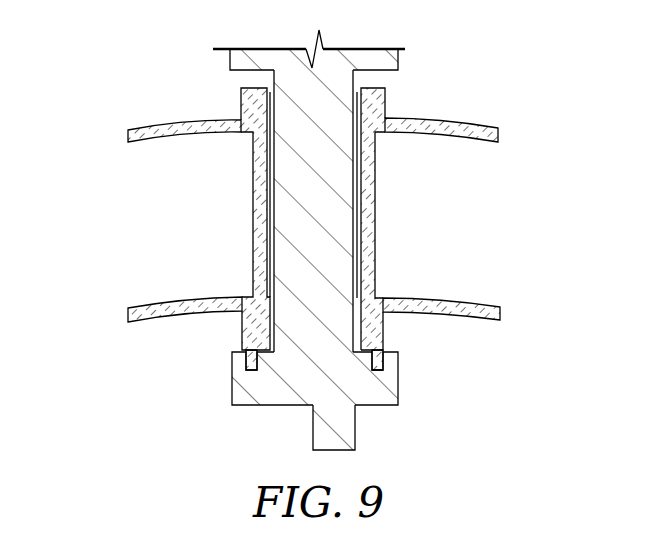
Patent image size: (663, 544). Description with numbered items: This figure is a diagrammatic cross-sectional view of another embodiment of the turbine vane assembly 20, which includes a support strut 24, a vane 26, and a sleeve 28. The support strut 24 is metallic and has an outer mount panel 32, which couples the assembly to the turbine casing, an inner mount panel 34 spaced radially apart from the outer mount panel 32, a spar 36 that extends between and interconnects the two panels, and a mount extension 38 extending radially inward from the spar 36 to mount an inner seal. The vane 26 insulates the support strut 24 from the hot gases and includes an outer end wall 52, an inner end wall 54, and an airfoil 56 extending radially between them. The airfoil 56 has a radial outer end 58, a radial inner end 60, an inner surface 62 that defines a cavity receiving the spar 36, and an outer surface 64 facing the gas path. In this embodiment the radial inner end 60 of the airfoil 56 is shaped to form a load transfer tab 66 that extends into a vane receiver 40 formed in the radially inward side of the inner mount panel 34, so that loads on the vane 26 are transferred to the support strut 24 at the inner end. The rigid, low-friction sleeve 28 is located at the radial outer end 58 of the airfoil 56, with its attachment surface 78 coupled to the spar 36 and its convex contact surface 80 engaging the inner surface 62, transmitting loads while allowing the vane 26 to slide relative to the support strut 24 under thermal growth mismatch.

The turbine vane assembly 20 is at (145, 78).
The support strut 24 is at (222, 426).
The vane 26 is at (444, 227).
The sleeve 28 is at (243, 86).
The outer mount panel 32 is at (400, 62).
The inner mount panel 34 is at (246, 393).
The spar 36 is at (268, 225).
The mount extension 38 is at (357, 436).
The vane receiver 40 is at (386, 334).
The outer end wall 52 is at (463, 126).
The inner end wall 54 is at (468, 298).
The airfoil 56 is at (384, 275).
The radial outer end 58 is at (387, 99).
The radial inner end 60 is at (382, 352).
The inner surface 62 is at (272, 183).
The outer surface 64 is at (252, 195).
The load transfer tab 66 is at (390, 372).
The attachment surface 78 is at (356, 100).
The contact surface 80 is at (358, 102).